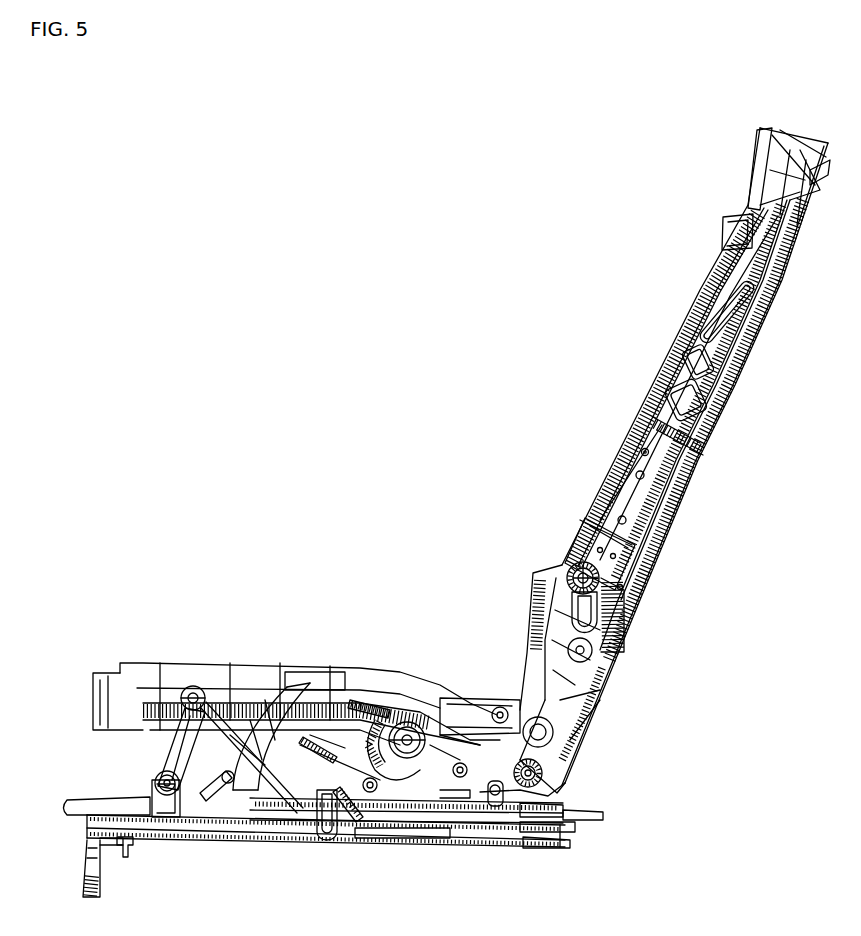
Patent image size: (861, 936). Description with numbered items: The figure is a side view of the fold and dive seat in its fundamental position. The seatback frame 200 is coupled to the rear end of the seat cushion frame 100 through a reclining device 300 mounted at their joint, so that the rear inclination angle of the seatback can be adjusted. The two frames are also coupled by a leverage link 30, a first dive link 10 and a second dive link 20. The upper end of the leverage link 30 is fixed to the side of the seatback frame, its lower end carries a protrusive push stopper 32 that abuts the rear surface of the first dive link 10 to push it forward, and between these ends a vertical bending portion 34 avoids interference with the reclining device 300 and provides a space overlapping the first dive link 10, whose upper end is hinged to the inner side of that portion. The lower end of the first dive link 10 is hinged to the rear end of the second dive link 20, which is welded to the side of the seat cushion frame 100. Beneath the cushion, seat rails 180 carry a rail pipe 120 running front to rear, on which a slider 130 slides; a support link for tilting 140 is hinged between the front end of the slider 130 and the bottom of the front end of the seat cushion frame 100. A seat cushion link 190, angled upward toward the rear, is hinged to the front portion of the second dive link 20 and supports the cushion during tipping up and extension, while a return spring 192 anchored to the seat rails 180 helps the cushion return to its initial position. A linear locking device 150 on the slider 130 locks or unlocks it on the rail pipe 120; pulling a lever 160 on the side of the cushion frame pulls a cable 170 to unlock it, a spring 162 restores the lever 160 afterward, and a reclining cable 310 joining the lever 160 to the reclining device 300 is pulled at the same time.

The first dive link 10 is at (600, 714).
The second dive link 20 is at (473, 702).
The leverage link 30 is at (645, 610).
The push stopper 32 is at (620, 658).
The vertical bending portion 34 is at (650, 588).
The seat cushion frame 100 is at (295, 665).
The rail pipe 120 is at (425, 815).
The slider 130 is at (356, 845).
The support link for tilting 140 is at (280, 830).
The linear locking device 150 is at (365, 815).
The lever 160 is at (400, 727).
The spring 162 is at (383, 700).
The cable 170 is at (268, 818).
The seat rail 180 is at (173, 845).
The seat cushion link 190 is at (200, 690).
The return spring 192 is at (332, 822).
The seatback frame 200 is at (575, 524).
The reclining device 300 is at (560, 573).
The reclining cable 310 is at (248, 800).